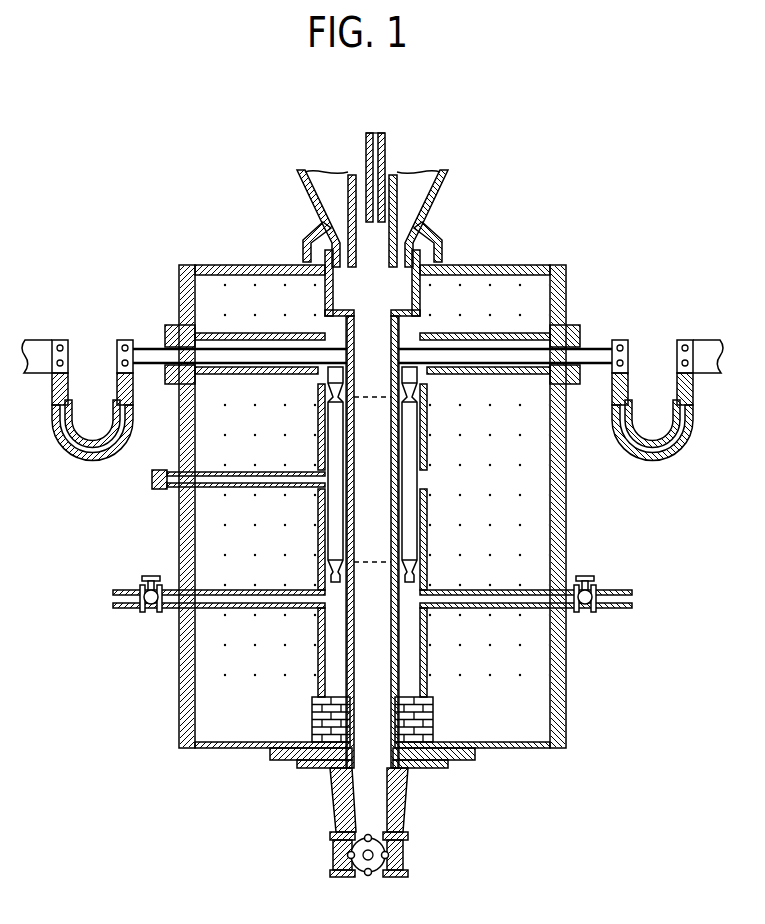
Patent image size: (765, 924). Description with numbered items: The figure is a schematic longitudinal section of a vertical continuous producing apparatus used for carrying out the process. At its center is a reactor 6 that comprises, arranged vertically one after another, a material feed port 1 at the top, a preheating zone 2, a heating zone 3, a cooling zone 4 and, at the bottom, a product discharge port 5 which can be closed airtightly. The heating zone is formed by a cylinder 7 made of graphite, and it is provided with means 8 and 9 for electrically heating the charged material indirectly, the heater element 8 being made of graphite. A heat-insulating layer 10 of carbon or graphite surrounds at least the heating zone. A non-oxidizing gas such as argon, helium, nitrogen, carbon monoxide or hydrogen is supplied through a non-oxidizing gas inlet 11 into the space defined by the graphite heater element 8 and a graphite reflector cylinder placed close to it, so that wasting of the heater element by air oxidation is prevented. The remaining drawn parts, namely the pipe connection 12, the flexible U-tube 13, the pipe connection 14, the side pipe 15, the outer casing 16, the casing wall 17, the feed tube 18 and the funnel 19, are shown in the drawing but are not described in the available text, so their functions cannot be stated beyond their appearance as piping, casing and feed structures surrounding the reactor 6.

The material feed port 1 is at (402, 257).
The preheating zone 2 is at (381, 364).
The heating zone 3 is at (381, 487).
The cooling zone 4 is at (378, 707).
The product discharge port 5 is at (372, 838).
The reactor 6 is at (380, 427).
The cylinder 7 is at (395, 452).
The heater element 8 is at (410, 475).
The means for electrically heating 9 is at (423, 525).
The heat-insulating layer 10 is at (488, 568).
The non-oxidizing gas inlet 11 is at (627, 598).
The upper gas pipe 12 is at (597, 340).
The flexible U-tube 13 is at (690, 456).
The pipe connection 14 is at (714, 340).
The side pipe 15 is at (152, 481).
The outer casing 16 is at (565, 672).
The casing wall 17 is at (552, 713).
The feed tube 18 is at (385, 152).
The funnel 19 is at (430, 178).